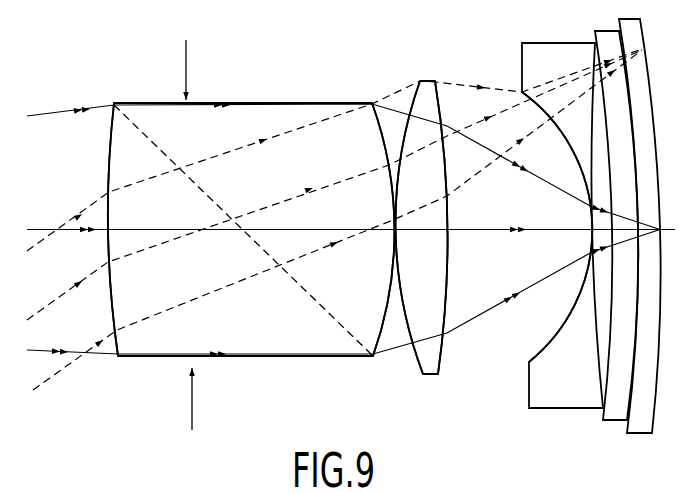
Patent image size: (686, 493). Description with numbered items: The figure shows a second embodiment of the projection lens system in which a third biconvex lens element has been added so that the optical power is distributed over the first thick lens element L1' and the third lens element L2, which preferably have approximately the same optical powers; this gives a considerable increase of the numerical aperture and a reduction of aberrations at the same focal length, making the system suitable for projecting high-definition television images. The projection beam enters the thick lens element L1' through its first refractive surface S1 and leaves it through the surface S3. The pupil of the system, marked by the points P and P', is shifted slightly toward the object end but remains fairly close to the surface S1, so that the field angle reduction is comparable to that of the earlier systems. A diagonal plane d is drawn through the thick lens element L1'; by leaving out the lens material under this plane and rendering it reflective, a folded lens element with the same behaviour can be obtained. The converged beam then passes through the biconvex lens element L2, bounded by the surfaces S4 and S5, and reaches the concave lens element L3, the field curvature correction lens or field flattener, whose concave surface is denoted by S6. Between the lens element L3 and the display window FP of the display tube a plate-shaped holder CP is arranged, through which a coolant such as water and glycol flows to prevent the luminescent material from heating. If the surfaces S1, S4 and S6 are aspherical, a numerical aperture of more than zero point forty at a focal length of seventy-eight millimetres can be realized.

The pupil P is at (193, 69).
The pupil P' is at (202, 400).
The first thick lens element L1' is at (251, 267).
The first refractive surface S1 is at (114, 343).
The surface of lens element L1' S3 is at (384, 337).
The diagonal plane d is at (328, 315).
The third lens element L2 is at (421, 254).
The surface of lens element L2 S4 is at (412, 347).
The surface of lens element L2 S5 is at (442, 346).
The concave lens element L3 is at (562, 256).
The concave surface S6 is at (539, 352).
The plate-shaped holder CP is at (617, 408).
The display window FP is at (639, 417).